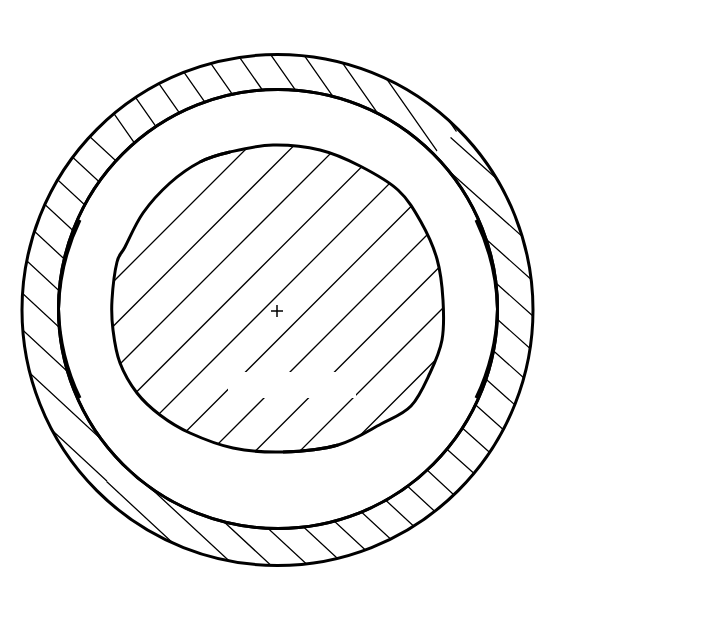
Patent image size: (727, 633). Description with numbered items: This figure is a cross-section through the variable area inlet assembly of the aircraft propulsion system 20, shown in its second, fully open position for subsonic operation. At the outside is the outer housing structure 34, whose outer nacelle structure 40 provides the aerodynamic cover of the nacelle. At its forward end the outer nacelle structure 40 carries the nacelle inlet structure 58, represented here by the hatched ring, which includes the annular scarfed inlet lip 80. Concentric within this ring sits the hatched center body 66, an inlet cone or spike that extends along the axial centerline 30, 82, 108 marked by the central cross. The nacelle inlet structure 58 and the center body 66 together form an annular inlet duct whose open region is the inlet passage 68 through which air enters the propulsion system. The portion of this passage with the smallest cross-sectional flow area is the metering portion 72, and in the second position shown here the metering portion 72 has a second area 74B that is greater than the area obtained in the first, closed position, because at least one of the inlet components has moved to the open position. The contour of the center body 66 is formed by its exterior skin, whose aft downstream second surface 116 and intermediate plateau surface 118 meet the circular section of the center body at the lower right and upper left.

The aircraft propulsion system 20 is at (521, 89).
The outer housing structure 34 is at (569, 276).
The outer nacelle structure 40 is at (551, 308).
The nacelle inlet structure 58 is at (424, 90).
The annular scarfed inlet lip 80 is at (525, 397).
The metering portion 72 is at (323, 118).
The second area 74B is at (108, 332).
The inlet passage 68 is at (482, 336).
The center body 66 is at (434, 240).
The axial centerline 30 is at (292, 352).
The centerline 82 is at (292, 352).
The axial centerline 108 is at (282, 315).
The second surface 116 is at (340, 445).
The plateau surface 118 is at (200, 162).